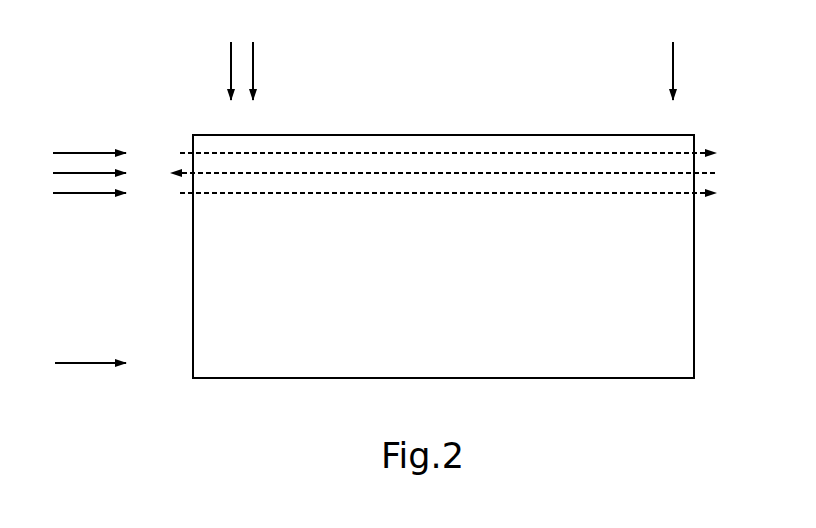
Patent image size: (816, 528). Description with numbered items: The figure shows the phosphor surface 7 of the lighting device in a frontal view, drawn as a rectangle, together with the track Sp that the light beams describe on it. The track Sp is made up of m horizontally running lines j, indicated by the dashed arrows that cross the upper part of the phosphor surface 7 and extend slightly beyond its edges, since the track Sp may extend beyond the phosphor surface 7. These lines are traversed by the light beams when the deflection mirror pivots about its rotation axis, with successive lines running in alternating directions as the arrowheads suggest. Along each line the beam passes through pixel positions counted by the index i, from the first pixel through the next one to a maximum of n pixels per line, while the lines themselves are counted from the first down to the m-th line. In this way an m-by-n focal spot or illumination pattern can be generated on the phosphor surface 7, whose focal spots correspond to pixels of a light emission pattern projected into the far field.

The phosphor surface 7 is at (694, 304).
The track Sp is at (450, 152).
The pixel index i is at (231, 59).